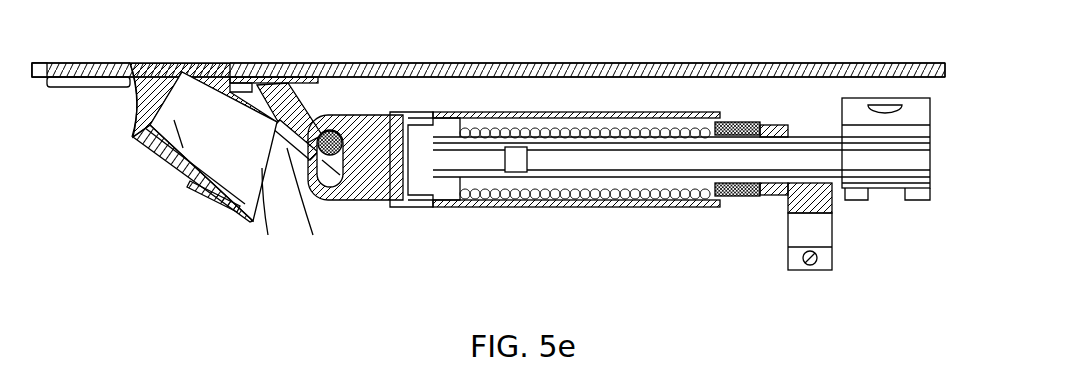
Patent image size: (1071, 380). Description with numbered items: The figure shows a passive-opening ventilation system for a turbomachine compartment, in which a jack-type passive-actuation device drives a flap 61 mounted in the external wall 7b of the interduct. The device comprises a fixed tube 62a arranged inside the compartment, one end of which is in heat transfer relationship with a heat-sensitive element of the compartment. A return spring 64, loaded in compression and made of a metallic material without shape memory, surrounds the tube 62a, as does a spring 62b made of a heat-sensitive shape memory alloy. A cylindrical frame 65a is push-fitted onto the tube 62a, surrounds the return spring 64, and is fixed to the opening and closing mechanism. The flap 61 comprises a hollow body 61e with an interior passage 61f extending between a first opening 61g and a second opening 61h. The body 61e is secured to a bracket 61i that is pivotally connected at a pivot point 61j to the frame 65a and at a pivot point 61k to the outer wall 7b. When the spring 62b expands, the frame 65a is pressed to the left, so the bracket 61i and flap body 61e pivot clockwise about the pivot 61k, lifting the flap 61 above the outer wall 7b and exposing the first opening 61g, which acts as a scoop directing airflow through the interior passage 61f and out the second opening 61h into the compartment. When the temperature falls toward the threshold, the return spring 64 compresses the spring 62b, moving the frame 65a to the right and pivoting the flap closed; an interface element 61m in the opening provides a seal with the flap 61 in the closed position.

The external wall of the interduct 7b is at (522, 63).
The flap 61 is at (197, 62).
The interface element 61m is at (293, 62).
The first opening 61g is at (135, 103).
The interior passage 61f is at (173, 122).
The hollow body 61e is at (190, 177).
The bracket 61i is at (243, 210).
The second opening 61h is at (258, 182).
The pivot point 61j is at (353, 200).
The pivot point 61k is at (302, 188).
The frame 65a is at (413, 195).
The return spring 64 is at (640, 130).
The spring 62b is at (752, 127).
The fixed tube 62a is at (803, 157).